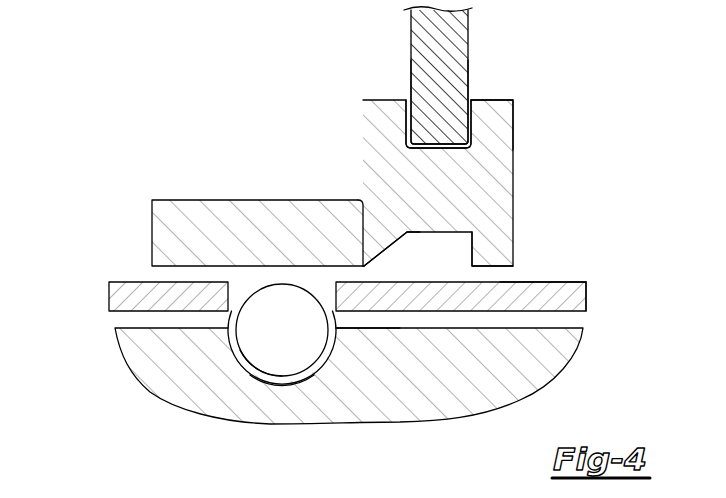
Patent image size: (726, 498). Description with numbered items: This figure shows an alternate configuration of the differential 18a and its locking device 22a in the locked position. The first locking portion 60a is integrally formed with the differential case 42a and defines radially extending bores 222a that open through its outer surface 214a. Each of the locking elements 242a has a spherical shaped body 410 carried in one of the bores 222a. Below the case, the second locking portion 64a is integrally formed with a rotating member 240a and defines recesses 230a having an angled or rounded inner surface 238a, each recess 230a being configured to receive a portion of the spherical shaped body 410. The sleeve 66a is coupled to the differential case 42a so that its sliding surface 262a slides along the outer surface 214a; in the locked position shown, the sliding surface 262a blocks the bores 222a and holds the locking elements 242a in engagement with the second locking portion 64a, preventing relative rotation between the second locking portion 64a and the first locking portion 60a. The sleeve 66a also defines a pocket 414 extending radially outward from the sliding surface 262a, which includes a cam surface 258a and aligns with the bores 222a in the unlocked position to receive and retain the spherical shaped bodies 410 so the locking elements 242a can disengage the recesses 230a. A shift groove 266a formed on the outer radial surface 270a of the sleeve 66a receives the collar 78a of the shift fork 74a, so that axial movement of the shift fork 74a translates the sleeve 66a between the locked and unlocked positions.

The shift fork 74a is at (418, 35).
The collar 78a is at (458, 33).
The locking device 22a is at (320, 157).
The outer radial surface 270a is at (493, 98).
The sleeve 66a is at (514, 125).
The cam surface 258a is at (395, 243).
The shift groove 266a is at (440, 150).
The pocket 414 is at (473, 243).
The outer surface 214a is at (543, 280).
The sliding surface 262a is at (167, 265).
The differential case 42a is at (362, 341).
The first locking portion 60a is at (200, 297).
The differential 18a is at (612, 306).
The inner surface 238a is at (118, 328).
The rotating member 240a is at (332, 400).
The locking elements 242a is at (267, 332).
The spherical shaped body 410 is at (263, 372).
The recesses 230a is at (295, 382).
The second locking portion 64a is at (352, 352).
The bores 222a is at (336, 297).